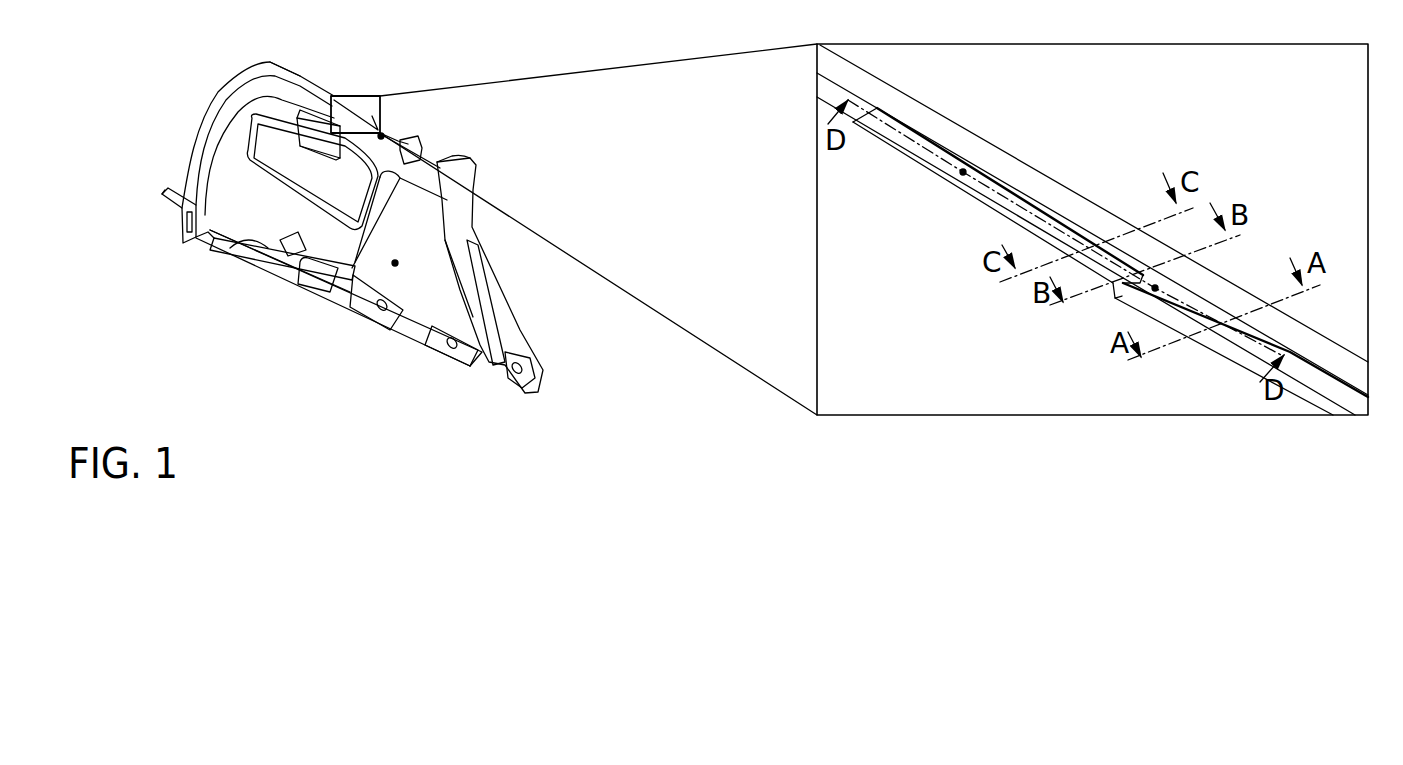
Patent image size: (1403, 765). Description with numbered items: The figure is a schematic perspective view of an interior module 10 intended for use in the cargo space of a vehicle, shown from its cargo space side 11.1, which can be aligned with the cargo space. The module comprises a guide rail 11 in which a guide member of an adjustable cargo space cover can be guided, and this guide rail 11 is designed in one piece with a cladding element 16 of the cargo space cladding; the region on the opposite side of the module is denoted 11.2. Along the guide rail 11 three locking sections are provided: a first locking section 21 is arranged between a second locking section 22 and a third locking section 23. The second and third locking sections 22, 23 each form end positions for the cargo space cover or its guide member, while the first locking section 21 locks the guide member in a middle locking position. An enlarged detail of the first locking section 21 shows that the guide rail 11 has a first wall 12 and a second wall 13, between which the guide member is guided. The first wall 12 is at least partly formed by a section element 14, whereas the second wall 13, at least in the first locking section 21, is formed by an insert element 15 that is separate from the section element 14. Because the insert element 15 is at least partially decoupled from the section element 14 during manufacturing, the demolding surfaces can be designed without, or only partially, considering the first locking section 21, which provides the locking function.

The interior module 10 is at (172, 146).
The guide rail 11 is at (384, 135).
The cargo space side 11.1 is at (250, 297).
The second body section 11.2 is at (506, 246).
The first wall 12 is at (982, 196).
The second wall 13 is at (1030, 206).
The section element 14 is at (1155, 288).
The insert element 15 is at (963, 172).
The cladding element 16 is at (395, 263).
The first locking section 21 is at (352, 108).
The second locking section 22 is at (406, 141).
The third locking section 23 is at (293, 74).